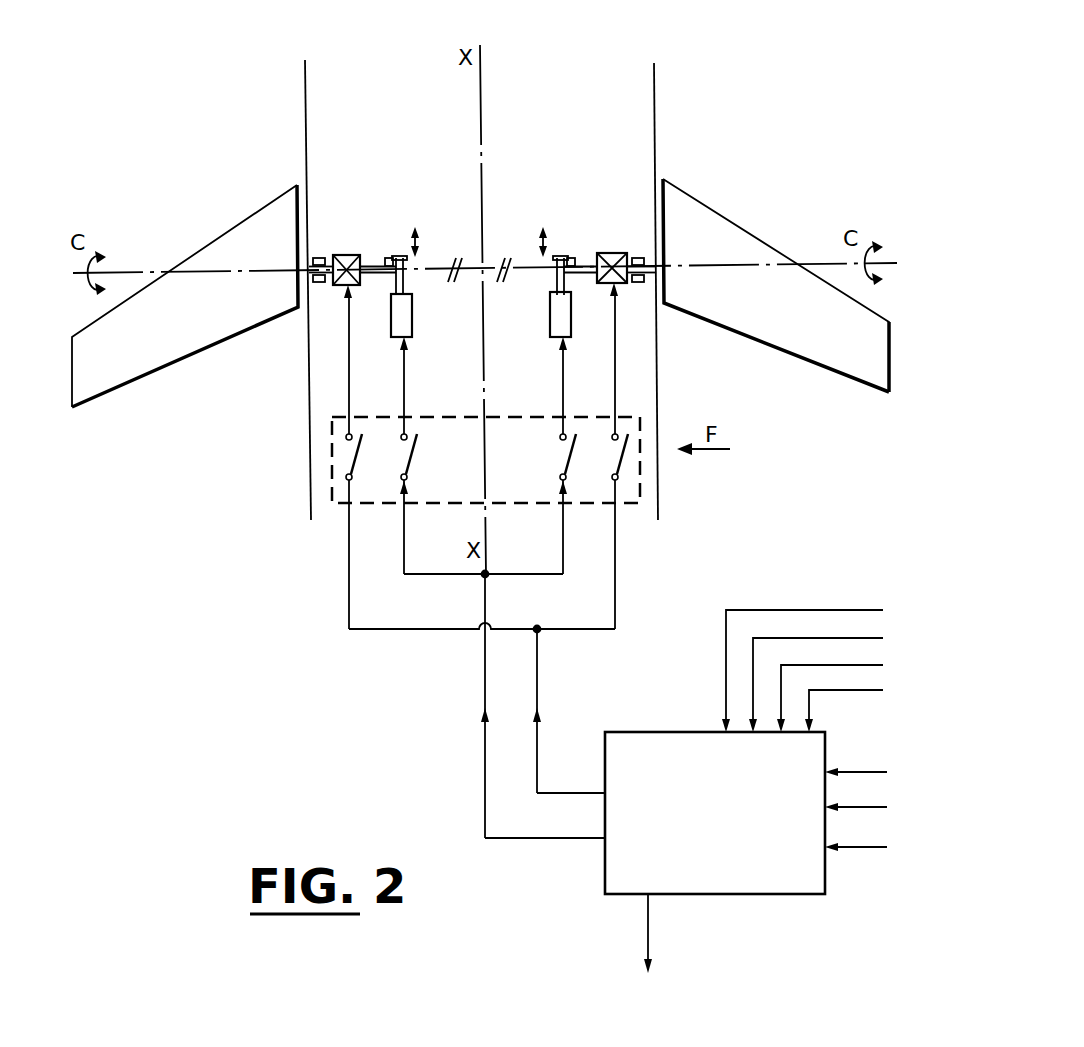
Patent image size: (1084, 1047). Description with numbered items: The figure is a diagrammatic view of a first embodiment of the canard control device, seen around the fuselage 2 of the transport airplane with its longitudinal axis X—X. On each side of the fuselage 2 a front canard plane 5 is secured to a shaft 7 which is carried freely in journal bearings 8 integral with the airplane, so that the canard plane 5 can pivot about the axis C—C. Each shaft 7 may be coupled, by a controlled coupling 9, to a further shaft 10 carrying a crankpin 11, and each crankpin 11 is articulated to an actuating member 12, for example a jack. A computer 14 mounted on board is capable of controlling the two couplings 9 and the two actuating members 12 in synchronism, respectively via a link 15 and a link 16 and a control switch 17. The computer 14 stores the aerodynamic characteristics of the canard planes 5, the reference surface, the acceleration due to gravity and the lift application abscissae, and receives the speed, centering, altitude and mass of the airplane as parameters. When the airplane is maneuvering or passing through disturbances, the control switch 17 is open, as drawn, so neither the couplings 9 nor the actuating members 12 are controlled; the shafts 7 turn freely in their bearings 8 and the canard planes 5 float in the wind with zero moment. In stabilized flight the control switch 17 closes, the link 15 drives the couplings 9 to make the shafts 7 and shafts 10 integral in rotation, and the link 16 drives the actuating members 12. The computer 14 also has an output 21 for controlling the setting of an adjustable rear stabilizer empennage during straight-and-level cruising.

The fuselage 2 is at (655, 85).
The canard plane 5 is at (160, 358).
The shaft 7 is at (318, 256).
The journal bearing 8 is at (318, 283).
The controlled coupling 9 is at (346, 253).
The shaft 10 is at (372, 280).
The crankpin 11 is at (395, 256).
The actuating member 12 is at (413, 326).
The computer 14 is at (726, 824).
The link 15 is at (538, 687).
The link 16 is at (482, 742).
The control switch 17 is at (332, 450).
The output 21 is at (655, 953).